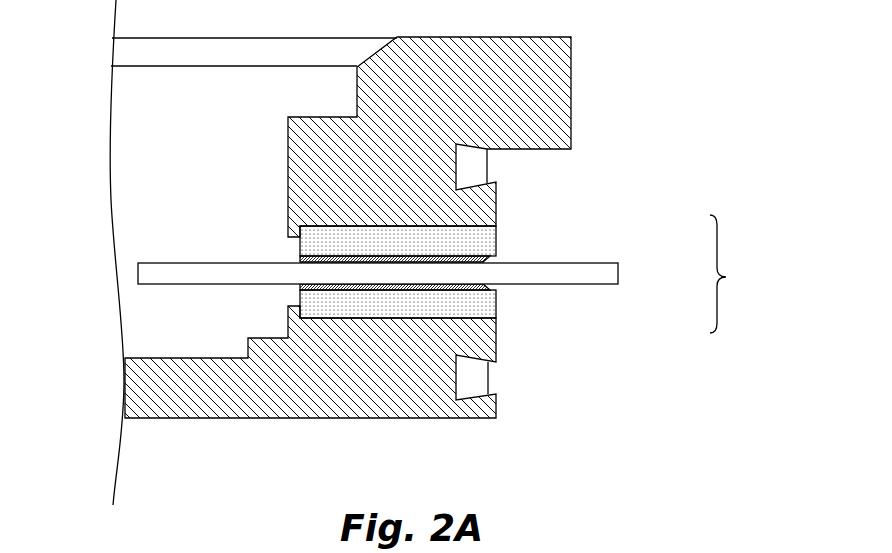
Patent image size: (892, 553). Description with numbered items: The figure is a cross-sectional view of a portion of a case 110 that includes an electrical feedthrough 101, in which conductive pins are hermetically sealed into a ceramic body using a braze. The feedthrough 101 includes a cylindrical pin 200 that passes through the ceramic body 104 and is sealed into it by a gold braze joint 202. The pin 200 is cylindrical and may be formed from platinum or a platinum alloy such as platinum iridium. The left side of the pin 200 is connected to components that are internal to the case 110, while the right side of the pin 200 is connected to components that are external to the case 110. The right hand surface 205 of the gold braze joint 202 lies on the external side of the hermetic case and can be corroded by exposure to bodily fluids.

The feedthrough 101 is at (726, 277).
The ceramic body 104 is at (487, 305).
The case 110 is at (310, 405).
The cylindrical pin 200 is at (620, 265).
The gold braze joint 202 is at (300, 255).
The right hand surface of the gold braze joint 205 is at (495, 258).